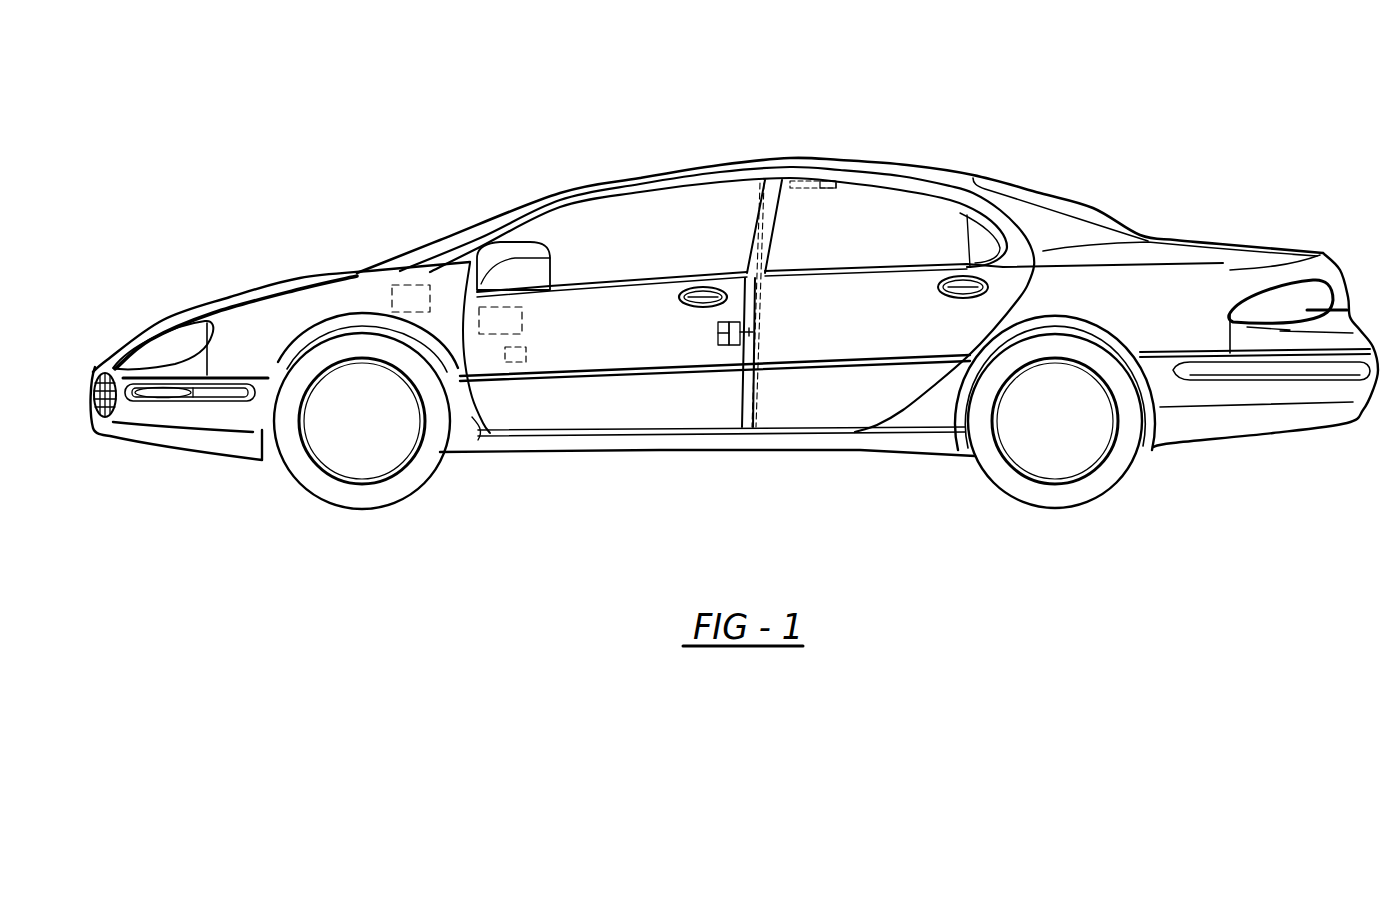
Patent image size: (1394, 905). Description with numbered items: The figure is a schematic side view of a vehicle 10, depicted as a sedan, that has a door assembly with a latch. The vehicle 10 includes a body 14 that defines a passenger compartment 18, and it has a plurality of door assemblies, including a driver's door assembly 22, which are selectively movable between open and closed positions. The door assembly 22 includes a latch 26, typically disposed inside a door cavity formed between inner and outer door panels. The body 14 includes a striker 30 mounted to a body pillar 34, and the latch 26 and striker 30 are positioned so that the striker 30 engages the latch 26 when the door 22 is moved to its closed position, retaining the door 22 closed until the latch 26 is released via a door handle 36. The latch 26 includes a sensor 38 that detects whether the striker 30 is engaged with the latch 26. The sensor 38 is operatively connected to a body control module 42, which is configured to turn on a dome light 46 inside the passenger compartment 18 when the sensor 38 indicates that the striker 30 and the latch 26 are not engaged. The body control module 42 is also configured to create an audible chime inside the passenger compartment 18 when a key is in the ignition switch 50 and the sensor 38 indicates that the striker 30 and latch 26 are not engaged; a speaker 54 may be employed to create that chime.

The vehicle 10 is at (393, 121).
The body 14 is at (920, 163).
The passenger compartment 18 is at (702, 247).
The driver's door assembly 22 is at (597, 305).
The latch 26 is at (730, 346).
The striker 30 is at (742, 336).
The body pillar 34 is at (758, 316).
The door handle 36 is at (686, 309).
The sensor 38 is at (722, 344).
The body control module 42 is at (392, 292).
The dome light 46 is at (822, 180).
The ignition switch 50 is at (521, 362).
The speaker 54 is at (490, 307).